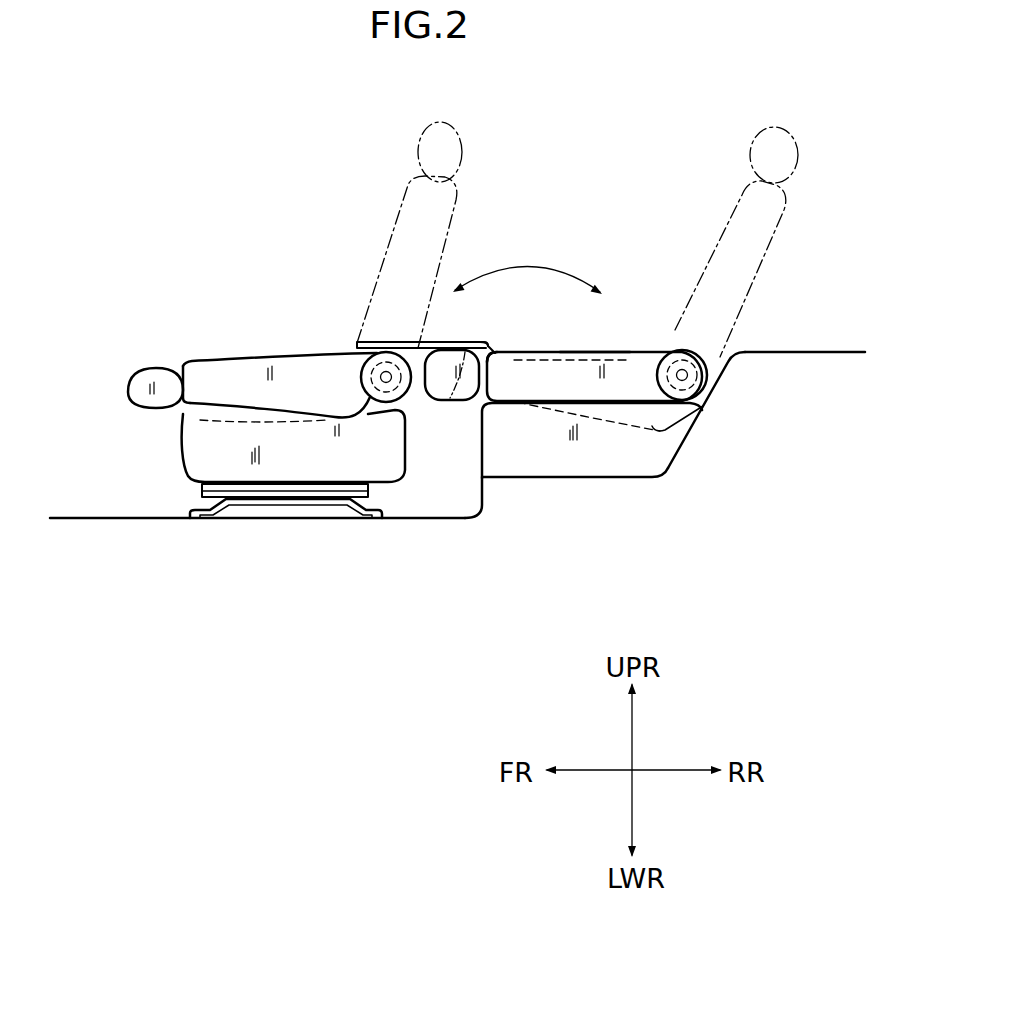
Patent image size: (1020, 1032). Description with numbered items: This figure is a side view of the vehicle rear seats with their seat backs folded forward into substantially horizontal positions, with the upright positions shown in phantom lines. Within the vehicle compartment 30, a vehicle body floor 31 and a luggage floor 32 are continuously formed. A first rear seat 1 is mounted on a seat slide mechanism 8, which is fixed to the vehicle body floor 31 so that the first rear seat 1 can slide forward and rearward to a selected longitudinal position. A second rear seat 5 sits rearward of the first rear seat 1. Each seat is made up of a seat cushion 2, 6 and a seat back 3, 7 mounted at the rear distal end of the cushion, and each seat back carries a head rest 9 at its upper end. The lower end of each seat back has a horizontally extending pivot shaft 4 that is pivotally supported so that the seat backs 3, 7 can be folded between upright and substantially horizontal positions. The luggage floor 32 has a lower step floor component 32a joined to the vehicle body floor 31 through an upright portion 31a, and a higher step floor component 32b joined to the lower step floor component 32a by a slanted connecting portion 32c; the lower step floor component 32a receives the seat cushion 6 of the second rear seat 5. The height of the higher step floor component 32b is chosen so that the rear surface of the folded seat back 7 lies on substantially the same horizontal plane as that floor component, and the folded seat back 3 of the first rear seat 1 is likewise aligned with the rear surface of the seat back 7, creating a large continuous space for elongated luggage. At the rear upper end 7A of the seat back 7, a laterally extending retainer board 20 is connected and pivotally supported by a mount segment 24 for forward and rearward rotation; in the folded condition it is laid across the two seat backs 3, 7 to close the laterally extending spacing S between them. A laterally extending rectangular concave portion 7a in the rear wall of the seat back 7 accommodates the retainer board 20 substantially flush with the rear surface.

The first rear seat 1 is at (72, 410).
The seat cushion 2 is at (236, 447).
The seat back 3 is at (296, 282).
The pivot shaft 4 is at (383, 378).
The second rear seat 5 is at (562, 574).
The seat cushion 6 is at (592, 491).
The seat back 7 is at (661, 354).
The rectangular concave portion 7a is at (588, 353).
The rear upper end 7A is at (524, 330).
The seat slide mechanism 8 is at (272, 498).
The head rest 9 is at (140, 386).
The retainer board 20 is at (408, 300).
The mount segment 24 is at (485, 348).
The vehicle compartment 30 is at (457, 349).
The vehicle body floor 31 is at (93, 521).
The upright portion 31a is at (482, 500).
The luggage floor 32 is at (673, 419).
The lower step floor component 32a is at (529, 477).
The higher step floor component 32b is at (756, 352).
The slanted connecting portion 32c is at (692, 442).
The spacing S is at (422, 422).